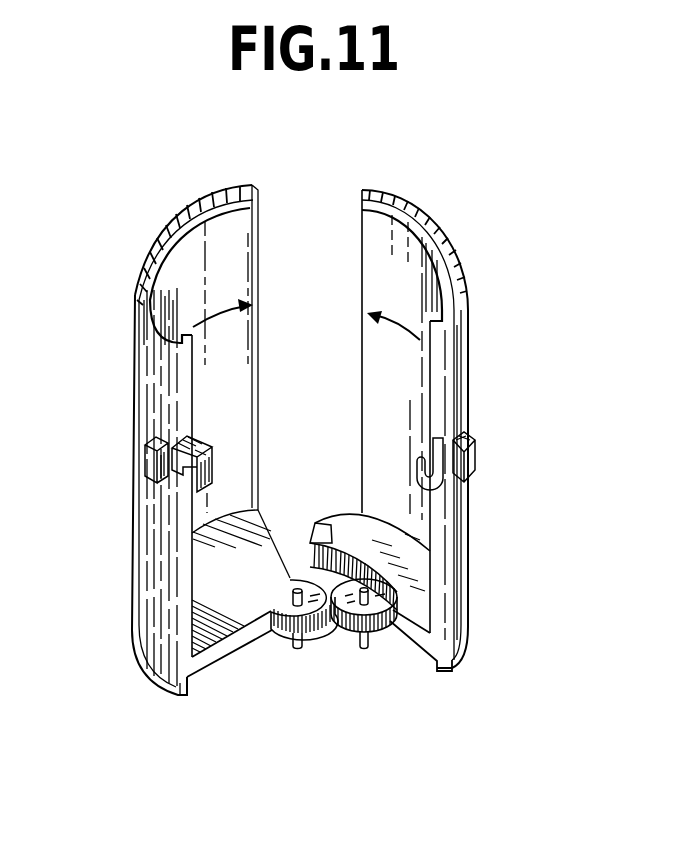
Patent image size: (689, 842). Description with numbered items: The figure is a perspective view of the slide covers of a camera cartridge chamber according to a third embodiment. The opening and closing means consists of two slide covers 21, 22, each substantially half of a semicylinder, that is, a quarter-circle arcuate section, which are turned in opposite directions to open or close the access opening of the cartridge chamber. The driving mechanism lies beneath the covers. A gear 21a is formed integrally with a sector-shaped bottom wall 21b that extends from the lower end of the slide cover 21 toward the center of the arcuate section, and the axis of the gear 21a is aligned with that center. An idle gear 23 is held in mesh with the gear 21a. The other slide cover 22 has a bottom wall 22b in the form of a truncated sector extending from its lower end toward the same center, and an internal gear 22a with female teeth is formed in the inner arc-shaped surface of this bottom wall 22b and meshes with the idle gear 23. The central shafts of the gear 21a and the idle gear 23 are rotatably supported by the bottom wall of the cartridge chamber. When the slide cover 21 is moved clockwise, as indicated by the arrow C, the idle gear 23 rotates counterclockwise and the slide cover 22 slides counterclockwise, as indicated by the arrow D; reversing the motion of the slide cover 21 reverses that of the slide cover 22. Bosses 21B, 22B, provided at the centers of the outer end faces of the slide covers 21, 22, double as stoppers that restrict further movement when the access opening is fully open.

The slide cover 21 is at (207, 362).
The boss 21B is at (143, 457).
The sector-shaped bottom wall 21b is at (217, 604).
The gear 21a is at (290, 610).
The slide cover 22 is at (407, 365).
The internal gear 22a is at (331, 524).
The boss 22B is at (462, 460).
The bottom wall 22b is at (413, 590).
The idle gear 23 is at (355, 607).